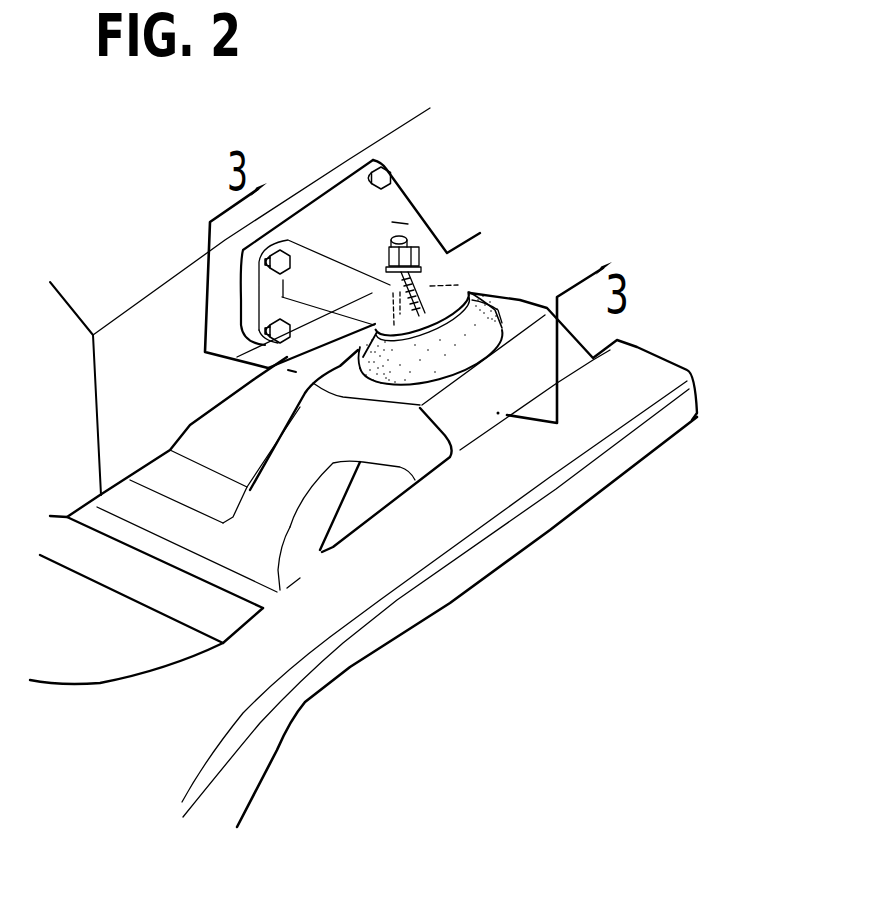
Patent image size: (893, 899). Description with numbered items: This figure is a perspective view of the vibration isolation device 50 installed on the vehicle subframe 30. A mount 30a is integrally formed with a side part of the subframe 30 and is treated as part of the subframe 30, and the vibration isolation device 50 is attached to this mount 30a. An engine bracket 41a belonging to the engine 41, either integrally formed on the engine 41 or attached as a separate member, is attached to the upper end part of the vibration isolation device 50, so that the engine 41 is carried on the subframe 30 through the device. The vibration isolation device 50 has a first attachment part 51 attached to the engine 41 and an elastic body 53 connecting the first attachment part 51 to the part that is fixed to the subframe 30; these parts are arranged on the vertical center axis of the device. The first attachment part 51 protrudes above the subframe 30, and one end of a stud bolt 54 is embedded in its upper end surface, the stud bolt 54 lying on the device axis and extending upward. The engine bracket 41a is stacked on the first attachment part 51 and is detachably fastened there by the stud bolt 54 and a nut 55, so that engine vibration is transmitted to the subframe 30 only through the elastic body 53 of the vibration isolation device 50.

The engine 41 is at (86, 297).
The engine bracket 41a is at (400, 237).
The nut 55 is at (432, 270).
The stud bolt 54 is at (422, 263).
The first attachment part 51 is at (462, 300).
The elastic body 53 is at (472, 306).
The vibration isolation device 50 is at (458, 350).
The mount 30a is at (377, 447).
The subframe 30 is at (283, 752).